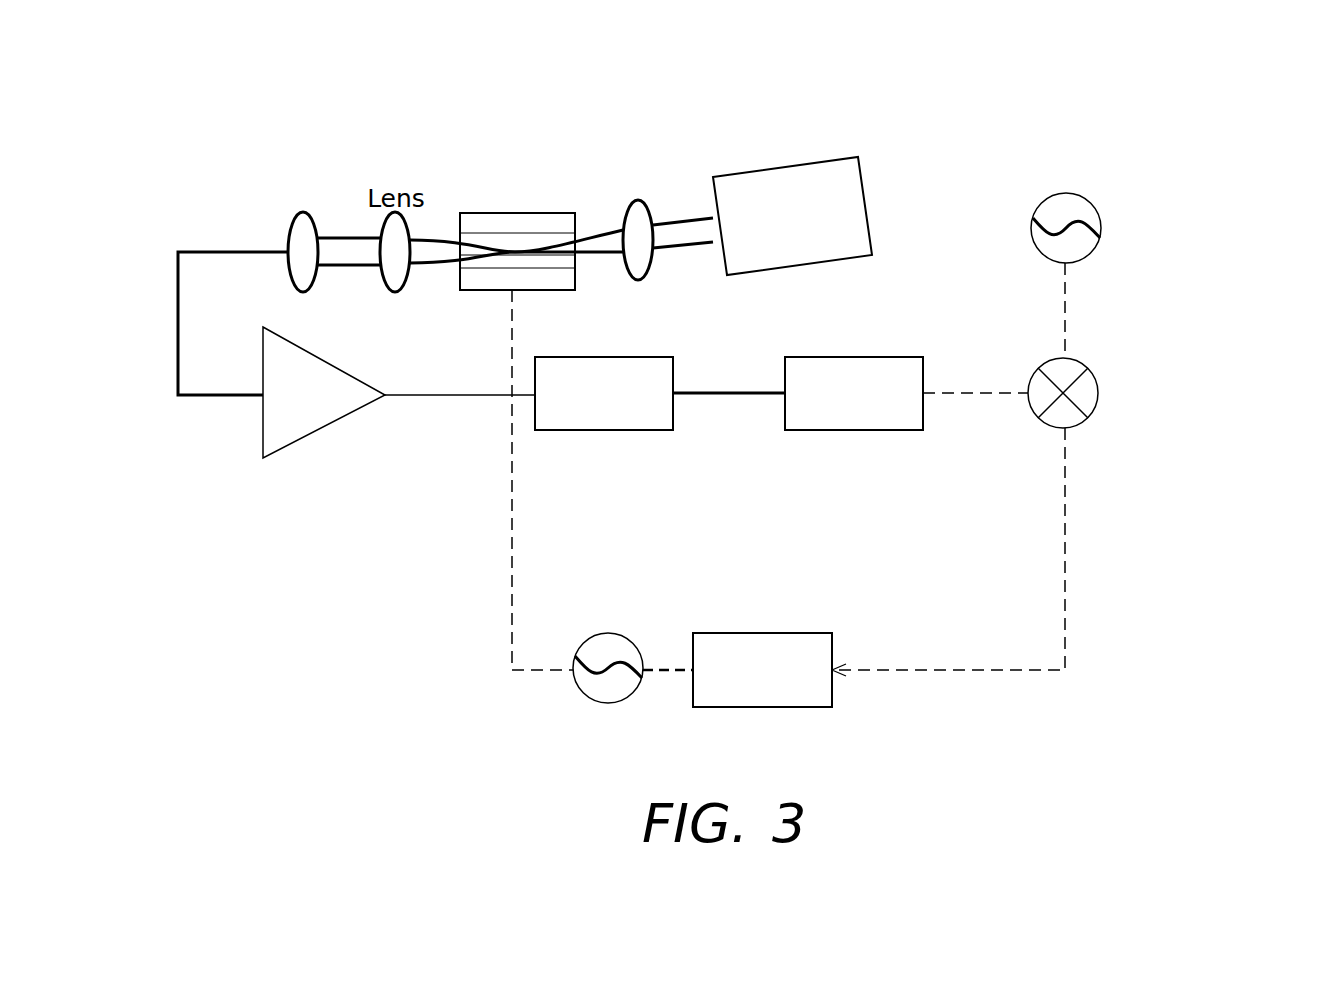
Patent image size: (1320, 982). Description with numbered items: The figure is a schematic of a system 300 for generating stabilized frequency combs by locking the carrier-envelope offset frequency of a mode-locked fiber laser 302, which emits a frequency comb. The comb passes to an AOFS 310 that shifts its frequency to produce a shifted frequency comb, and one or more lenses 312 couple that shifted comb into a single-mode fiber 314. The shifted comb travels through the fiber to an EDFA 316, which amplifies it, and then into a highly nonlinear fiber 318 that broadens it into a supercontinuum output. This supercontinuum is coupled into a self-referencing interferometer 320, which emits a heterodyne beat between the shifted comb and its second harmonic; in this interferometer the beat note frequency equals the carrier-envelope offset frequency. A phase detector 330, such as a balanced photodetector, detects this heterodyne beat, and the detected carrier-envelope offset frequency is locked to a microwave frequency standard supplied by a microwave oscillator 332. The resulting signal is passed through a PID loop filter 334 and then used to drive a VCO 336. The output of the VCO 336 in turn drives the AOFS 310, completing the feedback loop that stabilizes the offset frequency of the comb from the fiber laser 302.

The system 300 is at (1182, 118).
The mode-locked fiber laser 302 is at (862, 173).
The AOFS 310 is at (472, 213).
The lenses 312 is at (300, 196).
The single-mode fiber 314 is at (178, 303).
The EDFA 316 is at (300, 440).
The highly nonlinear fiber 318 is at (615, 430).
The f:2f interferometer 320 is at (875, 430).
The phase detector 330 is at (1078, 427).
The microwave oscillator 332 is at (1102, 217).
The PID loop filter 334 is at (783, 633).
The VCO 336 is at (580, 685).